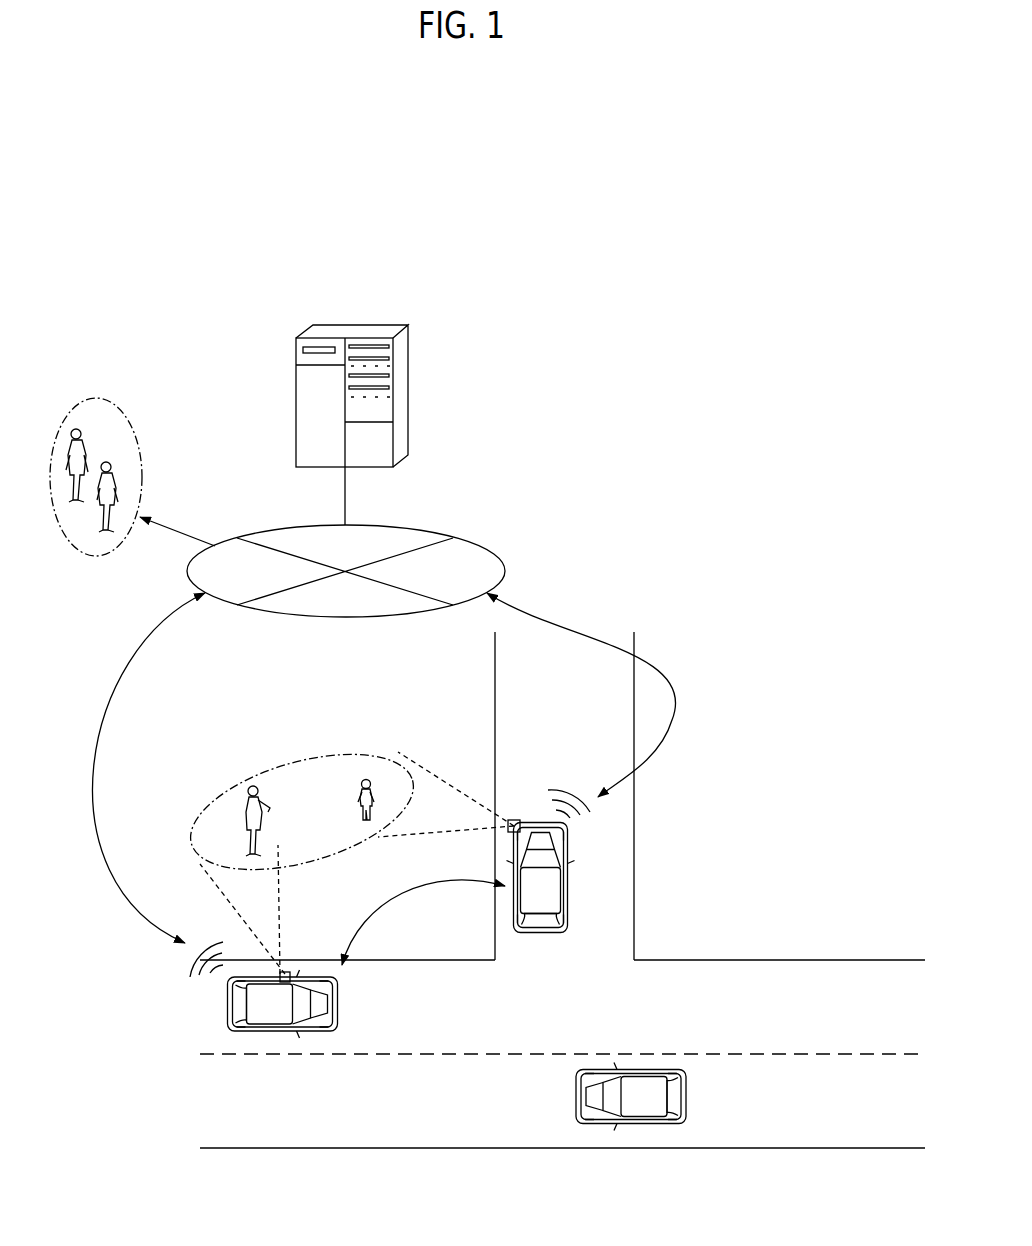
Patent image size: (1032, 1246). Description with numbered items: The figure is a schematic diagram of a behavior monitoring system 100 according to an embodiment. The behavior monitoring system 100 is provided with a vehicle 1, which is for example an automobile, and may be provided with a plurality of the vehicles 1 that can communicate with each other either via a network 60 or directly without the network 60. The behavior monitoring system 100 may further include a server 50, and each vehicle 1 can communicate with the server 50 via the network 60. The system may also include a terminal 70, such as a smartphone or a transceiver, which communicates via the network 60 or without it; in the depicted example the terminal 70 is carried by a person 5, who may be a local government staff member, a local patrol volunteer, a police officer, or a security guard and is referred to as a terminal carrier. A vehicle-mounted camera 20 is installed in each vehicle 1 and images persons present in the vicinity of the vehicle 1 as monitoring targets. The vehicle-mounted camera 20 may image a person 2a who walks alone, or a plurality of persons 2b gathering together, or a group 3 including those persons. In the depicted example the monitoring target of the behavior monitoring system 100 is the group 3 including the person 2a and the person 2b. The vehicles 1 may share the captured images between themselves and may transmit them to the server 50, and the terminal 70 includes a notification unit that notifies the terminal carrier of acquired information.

The vehicle 1 is at (332, 1004).
The person 2a is at (366, 779).
The person 2b is at (244, 799).
The group 3 is at (281, 765).
The person 5 is at (122, 408).
The vehicle-mounted camera 20 is at (290, 972).
The server 50 is at (352, 325).
The network 60 is at (417, 527).
The terminal 70 is at (66, 470).
The behavior monitoring system 100 is at (627, 440).